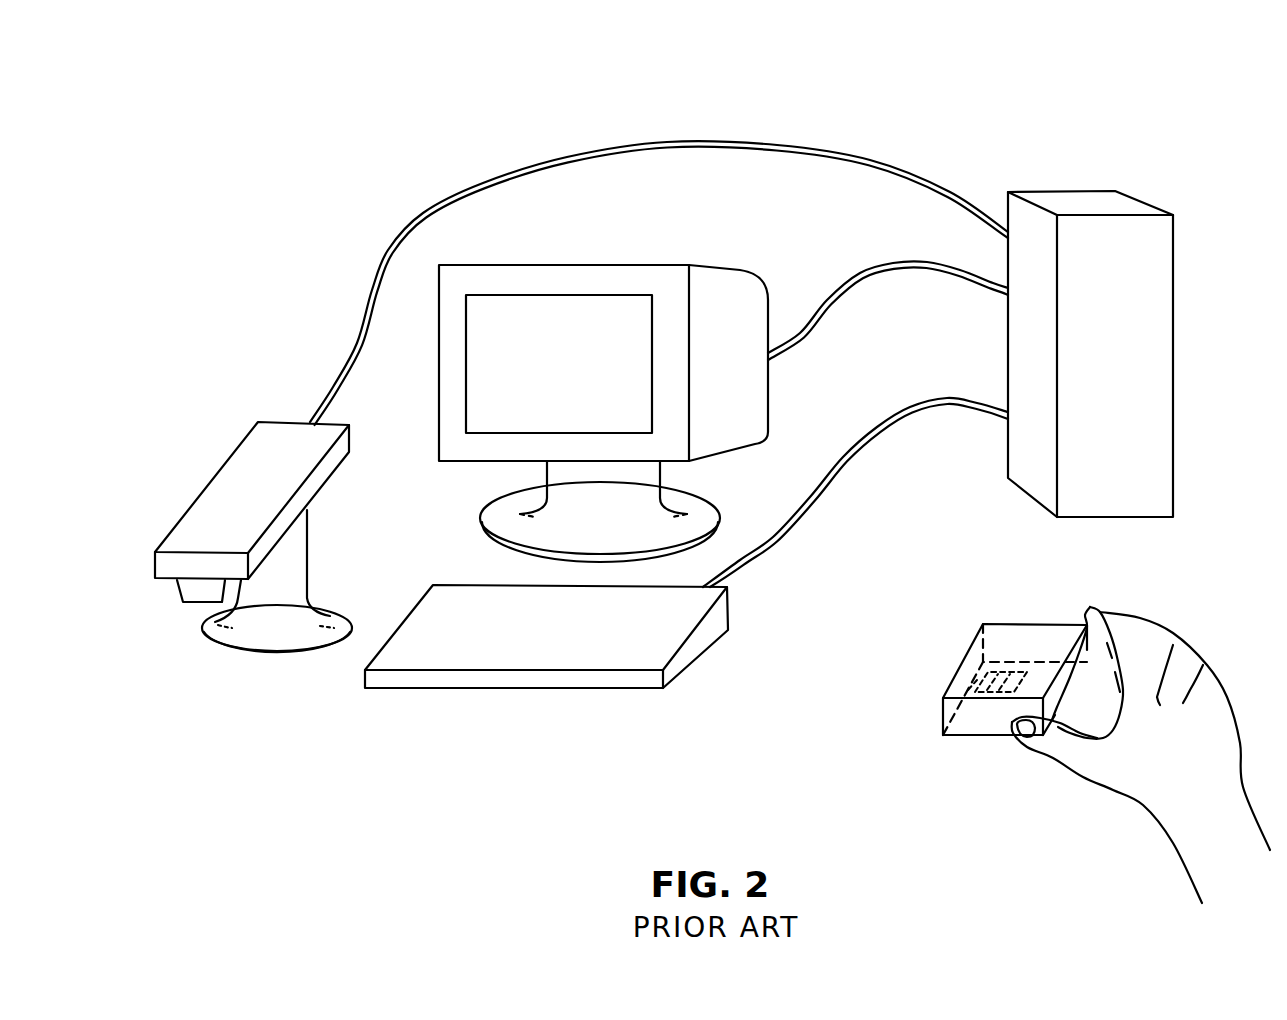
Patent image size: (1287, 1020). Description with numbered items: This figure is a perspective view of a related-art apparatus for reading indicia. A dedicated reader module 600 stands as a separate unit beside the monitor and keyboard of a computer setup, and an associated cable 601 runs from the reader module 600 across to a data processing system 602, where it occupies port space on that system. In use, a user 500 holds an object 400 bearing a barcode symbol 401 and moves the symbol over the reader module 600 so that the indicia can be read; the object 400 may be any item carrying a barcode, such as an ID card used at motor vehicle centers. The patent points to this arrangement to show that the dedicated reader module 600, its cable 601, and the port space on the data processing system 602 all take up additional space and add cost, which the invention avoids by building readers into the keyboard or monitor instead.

The object 400 is at (975, 732).
The barcode symbol 401 is at (987, 676).
The user 500 is at (1145, 625).
The dedicated reader module 600 is at (210, 478).
The associated cable 601 is at (668, 140).
The data processing system 602 is at (1175, 290).